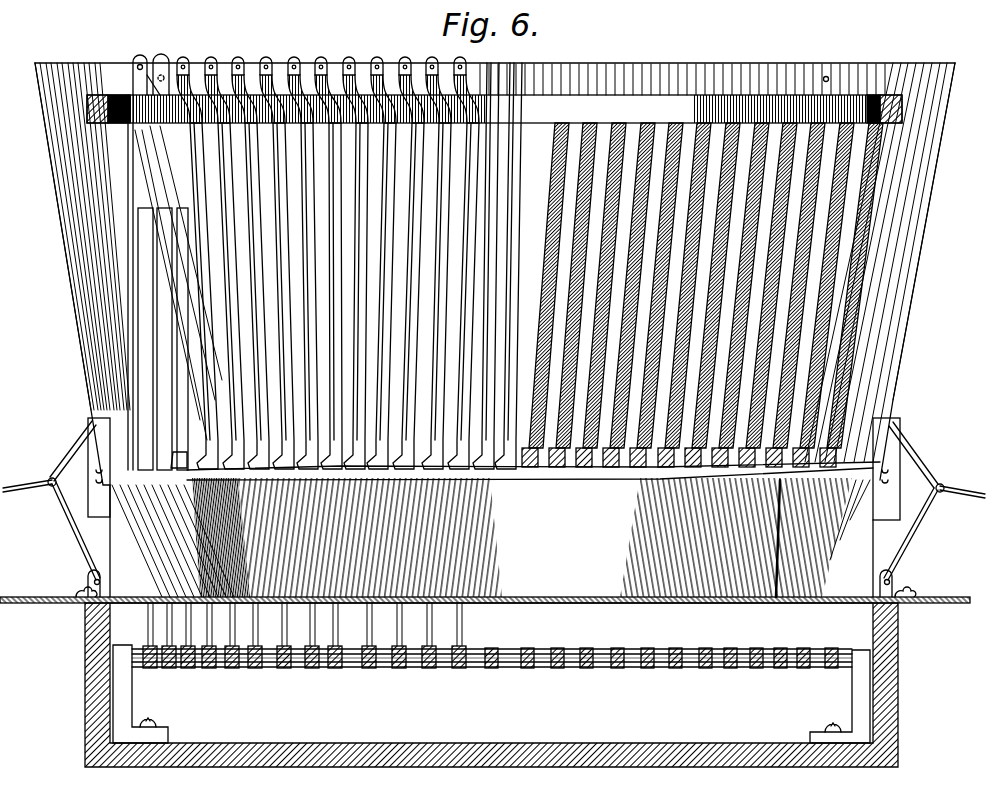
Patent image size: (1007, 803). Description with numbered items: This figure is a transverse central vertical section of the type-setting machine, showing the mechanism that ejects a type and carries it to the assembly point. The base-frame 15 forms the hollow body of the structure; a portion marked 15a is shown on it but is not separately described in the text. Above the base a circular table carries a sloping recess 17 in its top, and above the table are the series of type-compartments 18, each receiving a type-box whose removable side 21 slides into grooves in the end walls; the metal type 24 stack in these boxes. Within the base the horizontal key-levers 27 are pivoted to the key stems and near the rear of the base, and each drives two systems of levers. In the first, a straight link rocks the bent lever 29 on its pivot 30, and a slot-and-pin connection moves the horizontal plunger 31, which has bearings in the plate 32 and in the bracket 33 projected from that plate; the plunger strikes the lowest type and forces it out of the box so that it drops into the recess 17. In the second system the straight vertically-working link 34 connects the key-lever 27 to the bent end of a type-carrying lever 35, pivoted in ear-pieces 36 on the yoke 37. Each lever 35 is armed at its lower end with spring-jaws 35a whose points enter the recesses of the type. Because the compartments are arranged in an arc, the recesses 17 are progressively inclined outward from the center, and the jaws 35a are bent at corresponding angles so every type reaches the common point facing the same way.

The base-frame 15 is at (88, 668).
The base plate 15a is at (528, 603).
The recess 17 is at (630, 466).
The type-compartments 18 is at (491, 537).
The removable side 21 is at (82, 236).
The type 24 is at (186, 478).
The horizontal levers 27 is at (306, 670).
The bent lever 29 is at (72, 540).
The pivot 30 is at (90, 582).
The plunger 31 is at (24, 486).
The plate 32 is at (104, 482).
The bracket 33 is at (72, 446).
The vertically-working link 34 is at (136, 233).
The type-carrying lever 35 is at (196, 258).
The spring-jaws 35a is at (178, 452).
The ear-pieces 36 is at (176, 70).
The yoke 37 is at (100, 110).